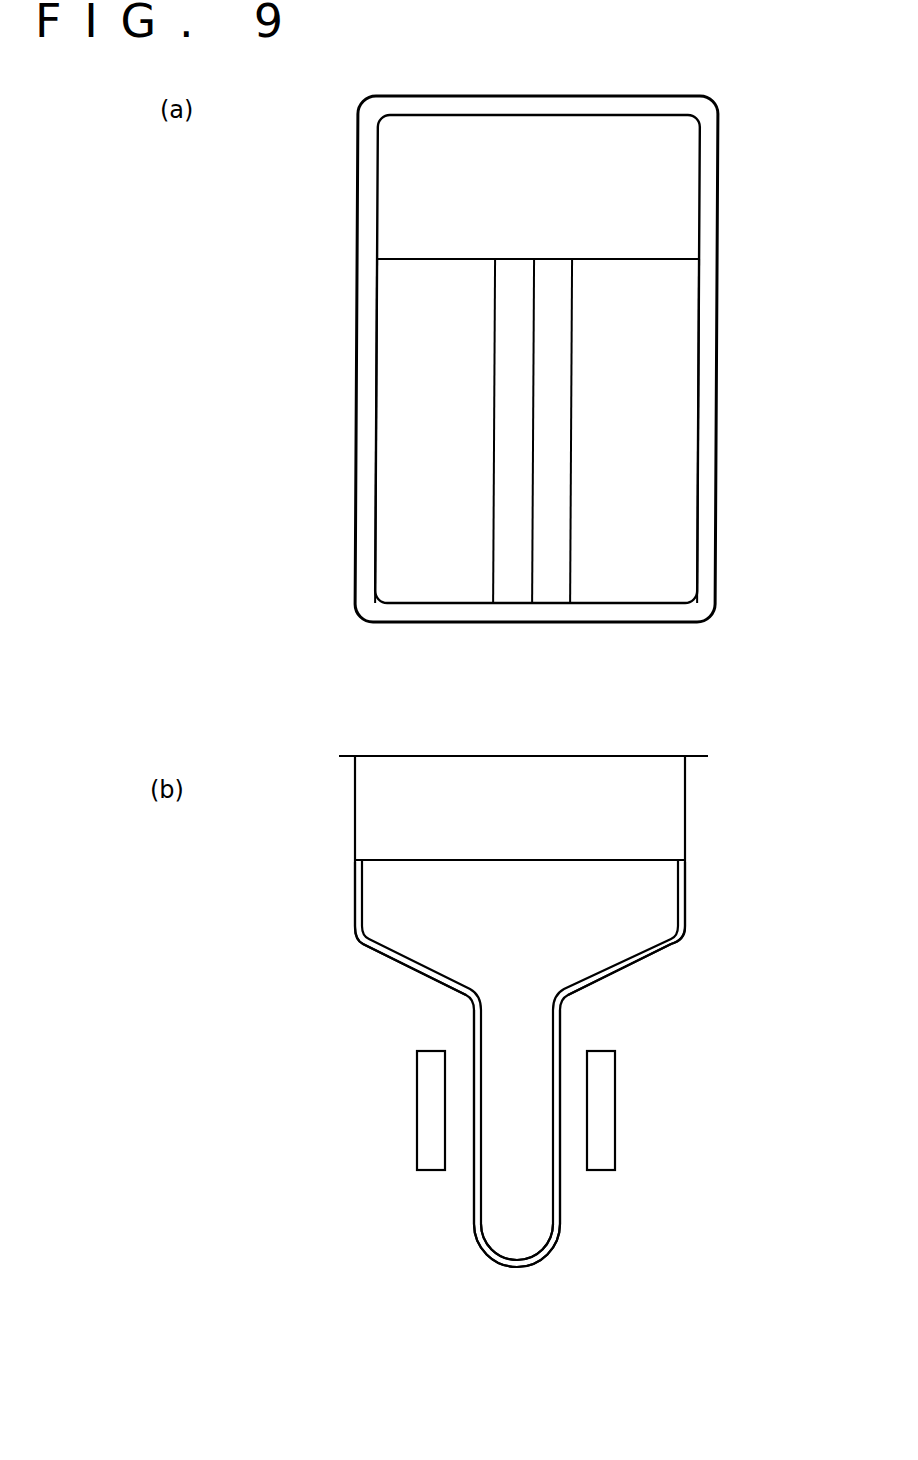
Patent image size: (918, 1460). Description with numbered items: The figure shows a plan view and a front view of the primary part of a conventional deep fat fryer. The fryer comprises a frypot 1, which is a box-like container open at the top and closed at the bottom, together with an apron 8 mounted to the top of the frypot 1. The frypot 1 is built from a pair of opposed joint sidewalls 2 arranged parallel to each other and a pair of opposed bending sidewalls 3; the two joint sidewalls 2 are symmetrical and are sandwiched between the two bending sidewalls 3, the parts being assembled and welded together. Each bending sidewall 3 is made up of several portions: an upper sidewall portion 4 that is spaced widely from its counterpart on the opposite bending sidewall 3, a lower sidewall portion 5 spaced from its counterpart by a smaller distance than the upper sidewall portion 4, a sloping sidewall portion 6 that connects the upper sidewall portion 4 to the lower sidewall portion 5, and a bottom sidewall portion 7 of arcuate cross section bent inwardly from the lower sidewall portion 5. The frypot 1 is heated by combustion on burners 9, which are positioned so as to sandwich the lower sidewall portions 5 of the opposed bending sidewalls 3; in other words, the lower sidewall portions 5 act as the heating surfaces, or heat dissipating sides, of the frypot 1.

The frypot 1 is at (635, 860).
The joint sidewalls 2 is at (656, 888).
The bending sidewalls 3 is at (352, 884).
The upper sidewall portion 4 is at (352, 910).
The lower sidewall portion 5 is at (474, 1027).
The sloping sidewall portion 6 is at (400, 360).
The bottom sidewall portion 7 is at (512, 570).
The apron 8 is at (720, 166).
The burners 9 is at (417, 1078).